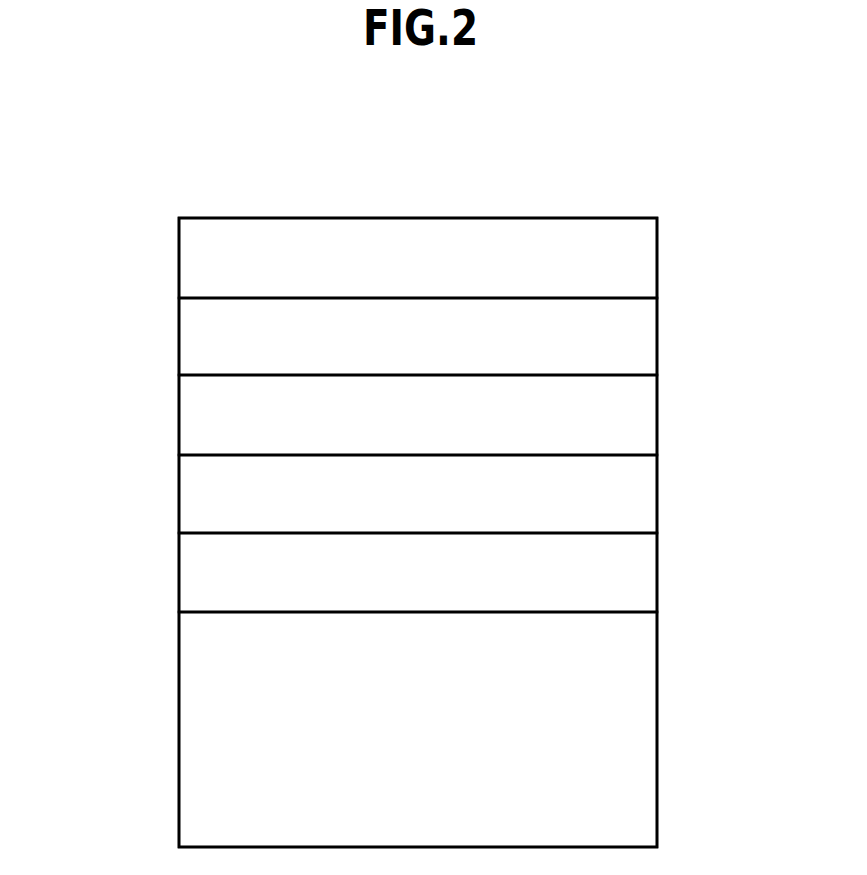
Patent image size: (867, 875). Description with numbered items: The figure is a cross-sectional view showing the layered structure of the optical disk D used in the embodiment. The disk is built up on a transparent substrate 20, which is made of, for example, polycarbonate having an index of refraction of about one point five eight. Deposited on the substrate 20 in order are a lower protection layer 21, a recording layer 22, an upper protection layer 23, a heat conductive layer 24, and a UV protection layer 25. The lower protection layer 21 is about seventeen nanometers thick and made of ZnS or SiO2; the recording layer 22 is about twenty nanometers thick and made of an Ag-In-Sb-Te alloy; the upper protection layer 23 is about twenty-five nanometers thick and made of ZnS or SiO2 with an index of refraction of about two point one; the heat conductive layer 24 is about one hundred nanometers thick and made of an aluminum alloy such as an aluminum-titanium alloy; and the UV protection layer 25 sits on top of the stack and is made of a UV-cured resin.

The optical disk D is at (106, 176).
The transparent substrate 20 is at (658, 730).
The lower protection layer 21 is at (658, 575).
The recording layer 22 is at (658, 495).
The upper protection layer 23 is at (658, 416).
The heat conductive layer 24 is at (658, 338).
The UV protection layer 25 is at (658, 258).